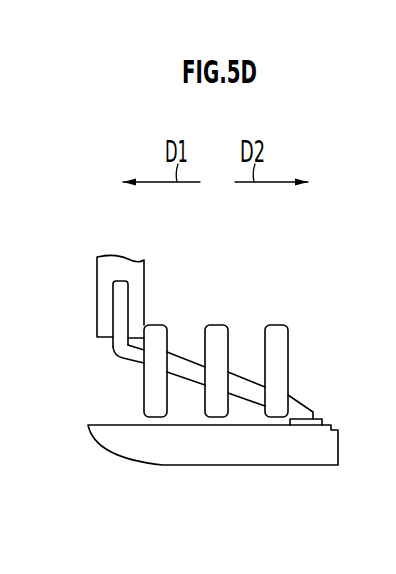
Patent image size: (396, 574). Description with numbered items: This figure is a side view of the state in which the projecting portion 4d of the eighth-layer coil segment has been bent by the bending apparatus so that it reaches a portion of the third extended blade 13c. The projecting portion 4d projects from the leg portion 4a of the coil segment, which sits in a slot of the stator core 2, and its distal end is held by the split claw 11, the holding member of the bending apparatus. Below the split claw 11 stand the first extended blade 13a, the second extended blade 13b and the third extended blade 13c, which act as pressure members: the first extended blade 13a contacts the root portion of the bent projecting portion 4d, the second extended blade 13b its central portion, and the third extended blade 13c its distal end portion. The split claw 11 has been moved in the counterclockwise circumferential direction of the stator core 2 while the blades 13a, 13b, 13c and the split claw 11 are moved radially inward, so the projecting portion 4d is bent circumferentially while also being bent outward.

The stator core 2 is at (338, 447).
The leg portion 4a is at (303, 409).
The projecting portion 4d is at (117, 302).
The split claw 11 is at (98, 305).
The first extended blade 13a is at (276, 325).
The second extended blade 13b is at (215, 325).
The third extended blade 13c is at (155, 418).